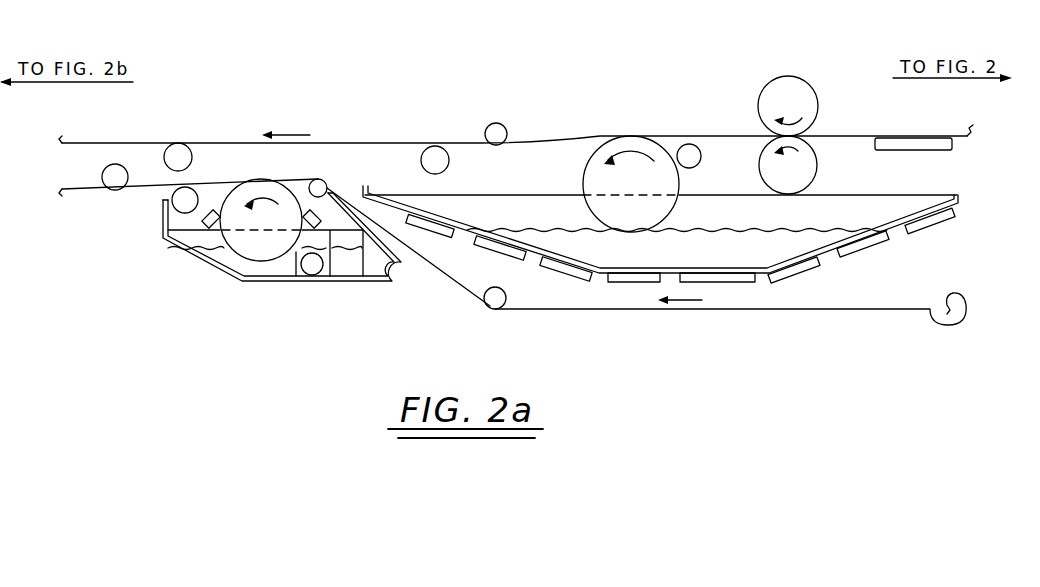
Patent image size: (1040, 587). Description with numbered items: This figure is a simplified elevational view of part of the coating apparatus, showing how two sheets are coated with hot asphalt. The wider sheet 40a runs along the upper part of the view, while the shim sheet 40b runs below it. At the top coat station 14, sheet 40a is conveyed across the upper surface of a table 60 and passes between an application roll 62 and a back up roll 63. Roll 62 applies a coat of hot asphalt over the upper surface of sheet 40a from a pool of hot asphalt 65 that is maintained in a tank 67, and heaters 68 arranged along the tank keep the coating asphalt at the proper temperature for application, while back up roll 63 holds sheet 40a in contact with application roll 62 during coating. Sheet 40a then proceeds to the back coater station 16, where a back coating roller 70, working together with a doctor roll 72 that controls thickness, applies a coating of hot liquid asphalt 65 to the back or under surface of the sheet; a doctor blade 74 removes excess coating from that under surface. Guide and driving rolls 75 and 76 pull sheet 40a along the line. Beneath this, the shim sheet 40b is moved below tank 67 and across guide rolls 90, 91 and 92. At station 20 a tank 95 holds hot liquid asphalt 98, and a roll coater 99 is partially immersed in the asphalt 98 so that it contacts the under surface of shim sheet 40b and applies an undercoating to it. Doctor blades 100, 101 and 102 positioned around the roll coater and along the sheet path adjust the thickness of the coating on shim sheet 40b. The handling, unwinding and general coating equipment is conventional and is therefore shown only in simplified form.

The top coat station 14 is at (813, 104).
The back coater station 16 is at (606, 153).
The undercoating station 20 is at (282, 241).
The sheet 40a is at (88, 142).
The shim sheet 40b is at (78, 190).
The table 60 is at (937, 151).
The application roll 62 is at (806, 108).
The back up roll 63 is at (812, 160).
The pool of hot asphalt 65 is at (787, 230).
The tank 67 is at (958, 194).
The heaters 68 is at (555, 258).
The back coating roller 70 is at (593, 176).
The doctor roll 72 is at (700, 155).
The doctor blade 74 is at (443, 158).
The guide and driving roll 75 is at (498, 130).
The guide and driving roll 76 is at (174, 150).
The guide roll 90 is at (497, 309).
The guide roll 91 is at (320, 186).
The guide roll 92 is at (108, 175).
The tank 95 is at (221, 269).
The hot liquid asphalt 98 is at (355, 262).
The roll coater 99 is at (261, 220).
The doctor blade 100 is at (304, 210).
The doctor blade 101 is at (216, 210).
The doctor blade 102 is at (172, 190).